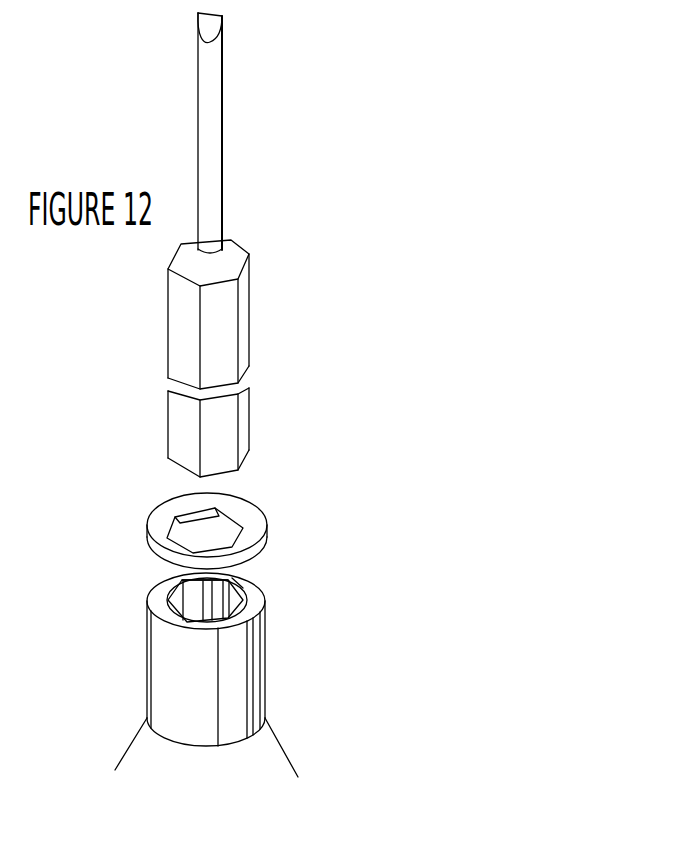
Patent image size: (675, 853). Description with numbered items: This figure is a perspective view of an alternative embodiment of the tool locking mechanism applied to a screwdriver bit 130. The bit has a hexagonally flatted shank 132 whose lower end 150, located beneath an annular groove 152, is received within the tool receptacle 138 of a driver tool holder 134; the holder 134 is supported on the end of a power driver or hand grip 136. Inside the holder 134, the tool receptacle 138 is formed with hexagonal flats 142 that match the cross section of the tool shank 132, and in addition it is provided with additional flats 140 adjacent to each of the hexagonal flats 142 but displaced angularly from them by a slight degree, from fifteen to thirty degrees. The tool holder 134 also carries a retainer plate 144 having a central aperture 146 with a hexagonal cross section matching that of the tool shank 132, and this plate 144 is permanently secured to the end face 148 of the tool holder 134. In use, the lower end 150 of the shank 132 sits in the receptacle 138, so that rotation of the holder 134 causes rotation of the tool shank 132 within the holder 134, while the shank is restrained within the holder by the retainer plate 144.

The screwdriver bit 130 is at (222, 147).
The hexagonally flatted shank 132 is at (245, 338).
The driver tool holder 134 is at (252, 643).
The power driver or hand grip 136 is at (150, 762).
The tool receptacle 138 is at (197, 598).
The additional flats 140 is at (253, 568).
The hexagonal flats 142 is at (233, 583).
The retainer plate 144 is at (173, 505).
The central aperture 146 is at (227, 515).
The end face 148 is at (167, 613).
The lower end 150 is at (180, 425).
The annular groove 152 is at (230, 387).